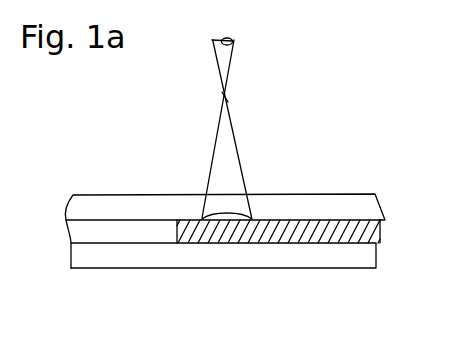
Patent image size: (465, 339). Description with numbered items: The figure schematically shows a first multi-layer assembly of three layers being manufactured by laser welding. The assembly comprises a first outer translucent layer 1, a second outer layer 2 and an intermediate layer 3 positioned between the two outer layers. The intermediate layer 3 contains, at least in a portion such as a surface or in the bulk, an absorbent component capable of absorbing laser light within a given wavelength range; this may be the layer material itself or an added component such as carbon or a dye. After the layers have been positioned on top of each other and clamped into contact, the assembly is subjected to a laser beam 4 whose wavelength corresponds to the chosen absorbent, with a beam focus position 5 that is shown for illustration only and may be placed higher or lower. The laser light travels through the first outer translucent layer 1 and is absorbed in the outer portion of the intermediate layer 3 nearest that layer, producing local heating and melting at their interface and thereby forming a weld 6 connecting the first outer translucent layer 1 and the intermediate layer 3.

The first outer translucent layer 1 is at (342, 208).
The second outer layer 2 is at (305, 255).
The intermediate layer 3 is at (374, 231).
The laser beam 4 is at (225, 56).
The beam focus position 5 is at (226, 97).
The weld 6 is at (228, 217).